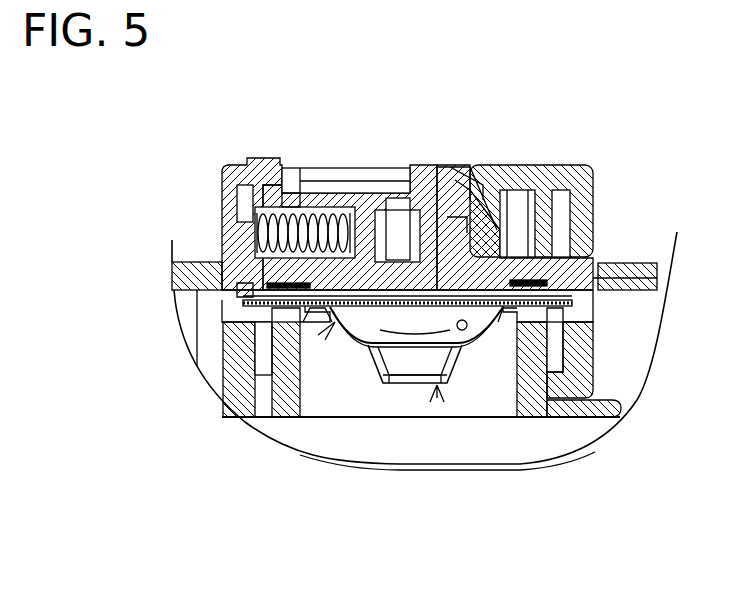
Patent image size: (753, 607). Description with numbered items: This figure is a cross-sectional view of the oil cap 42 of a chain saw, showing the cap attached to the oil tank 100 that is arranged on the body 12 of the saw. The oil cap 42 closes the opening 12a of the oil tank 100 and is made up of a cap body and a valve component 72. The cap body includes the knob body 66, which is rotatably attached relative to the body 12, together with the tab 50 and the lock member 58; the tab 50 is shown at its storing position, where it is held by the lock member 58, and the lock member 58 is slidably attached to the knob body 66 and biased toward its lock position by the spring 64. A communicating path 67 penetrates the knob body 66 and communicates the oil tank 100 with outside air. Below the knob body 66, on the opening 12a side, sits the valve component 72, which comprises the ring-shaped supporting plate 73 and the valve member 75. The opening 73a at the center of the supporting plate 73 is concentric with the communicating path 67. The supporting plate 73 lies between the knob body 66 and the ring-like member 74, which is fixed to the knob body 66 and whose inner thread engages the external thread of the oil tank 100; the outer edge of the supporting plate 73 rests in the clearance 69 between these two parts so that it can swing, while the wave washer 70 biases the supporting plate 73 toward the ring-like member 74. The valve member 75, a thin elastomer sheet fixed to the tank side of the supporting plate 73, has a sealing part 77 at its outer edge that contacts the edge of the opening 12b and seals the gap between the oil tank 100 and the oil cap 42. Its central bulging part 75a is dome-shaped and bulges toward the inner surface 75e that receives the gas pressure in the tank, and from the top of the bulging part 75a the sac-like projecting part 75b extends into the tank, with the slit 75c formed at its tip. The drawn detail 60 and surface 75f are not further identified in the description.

The oil cap 42 is at (377, 67).
The opening 73a is at (371, 200).
The communicating path 67 is at (425, 190).
The lock member 58 is at (447, 178).
The pivot 60 is at (460, 178).
The tab 50 is at (545, 200).
The body 12 is at (677, 232).
The knob body 66 is at (622, 262).
The wave washer 70 is at (590, 276).
The supporting plate 73 is at (580, 302).
The spring 64 is at (253, 308).
The clearance 69 is at (282, 323).
The sealing part 77 is at (265, 375).
The ring-like member 74 is at (233, 412).
The edge of the opening 12b is at (268, 413).
The opening 12a is at (330, 418).
The valve member 75 is at (285, 335).
The bulging part 75a is at (325, 330).
The projecting part 75b is at (390, 380).
The valve component 72 is at (437, 390).
The slit 75c is at (409, 380).
The diaphragm slope 75f is at (472, 337).
The inner surface 75e is at (503, 330).
The oil tank 100 is at (587, 414).